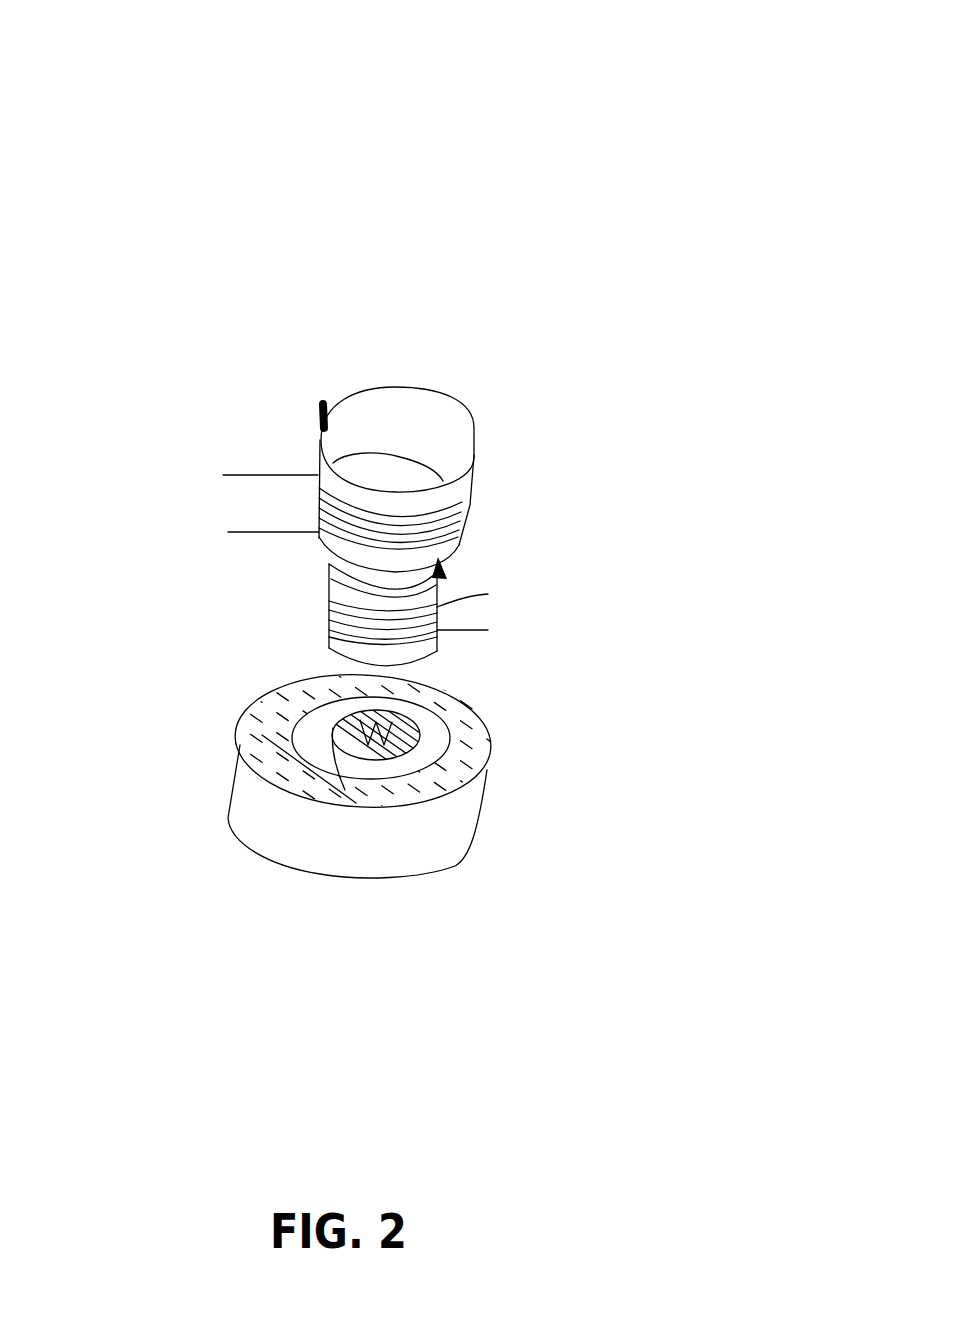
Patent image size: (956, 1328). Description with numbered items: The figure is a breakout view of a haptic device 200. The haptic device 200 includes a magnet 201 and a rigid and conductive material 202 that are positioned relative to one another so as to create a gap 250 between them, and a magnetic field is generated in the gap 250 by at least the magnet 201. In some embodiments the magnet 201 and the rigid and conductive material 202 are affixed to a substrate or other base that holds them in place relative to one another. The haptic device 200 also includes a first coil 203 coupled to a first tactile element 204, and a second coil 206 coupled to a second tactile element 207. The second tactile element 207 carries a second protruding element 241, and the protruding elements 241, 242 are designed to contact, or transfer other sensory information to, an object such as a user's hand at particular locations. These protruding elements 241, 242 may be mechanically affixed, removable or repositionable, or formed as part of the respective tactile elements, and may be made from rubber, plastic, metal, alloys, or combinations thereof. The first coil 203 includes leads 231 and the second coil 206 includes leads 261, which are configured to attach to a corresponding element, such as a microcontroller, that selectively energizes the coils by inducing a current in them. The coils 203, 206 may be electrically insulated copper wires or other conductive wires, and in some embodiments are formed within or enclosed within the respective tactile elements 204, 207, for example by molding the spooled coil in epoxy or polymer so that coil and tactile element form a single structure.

The haptic device 200 is at (481, 62).
The magnet 201 is at (312, 742).
The rigid and conductive material 202 is at (462, 782).
The first coil 203 is at (328, 633).
The first tactile element 204 is at (403, 650).
The second coil 206 is at (460, 518).
The second tactile element 207 is at (405, 424).
The leads 231 is at (495, 630).
The second protruding element 241 is at (326, 406).
The protruding element 242 is at (446, 575).
The gap 250 is at (310, 747).
The leads 261 is at (235, 530).